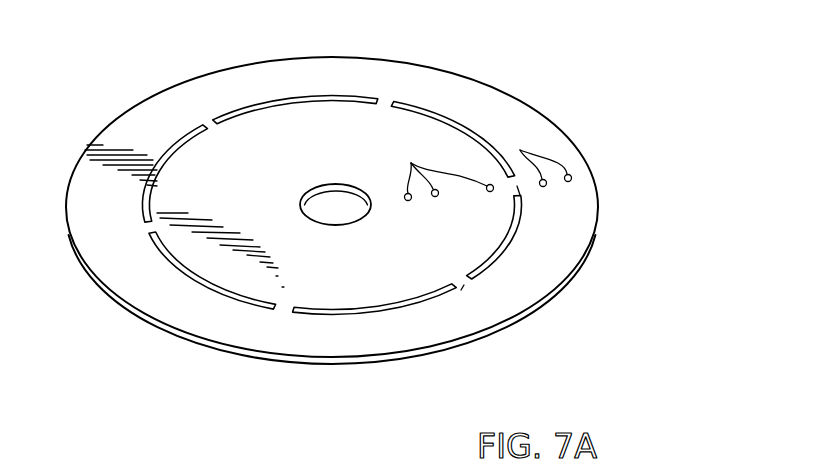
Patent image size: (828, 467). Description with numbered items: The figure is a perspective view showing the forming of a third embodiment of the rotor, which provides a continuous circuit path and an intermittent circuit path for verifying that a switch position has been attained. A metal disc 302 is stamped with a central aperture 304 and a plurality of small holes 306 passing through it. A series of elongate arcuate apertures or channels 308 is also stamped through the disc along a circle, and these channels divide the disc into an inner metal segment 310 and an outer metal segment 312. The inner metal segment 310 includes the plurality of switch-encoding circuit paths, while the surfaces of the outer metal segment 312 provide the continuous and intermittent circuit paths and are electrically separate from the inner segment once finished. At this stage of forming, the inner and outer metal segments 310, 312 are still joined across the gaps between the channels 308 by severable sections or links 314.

The metal disc 302 is at (389, 64).
The central aperture 304 is at (330, 186).
The small holes 306 is at (411, 163).
The elongate arcuate apertures or channels 308 is at (250, 107).
The inner metal segment 310 is at (318, 282).
The outer metal segment 312 is at (480, 322).
The severable sections or links 314 is at (508, 200).